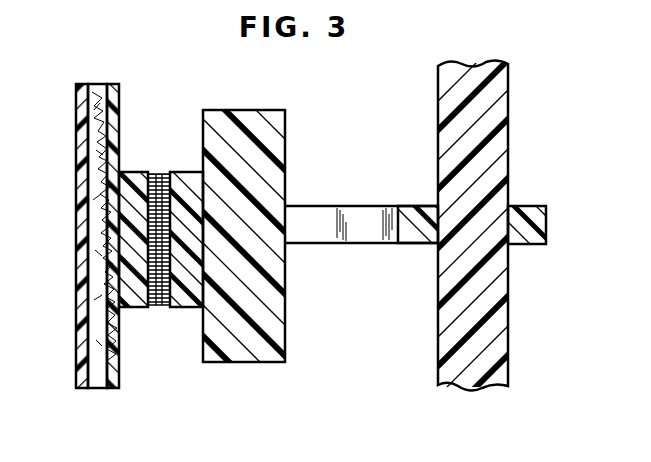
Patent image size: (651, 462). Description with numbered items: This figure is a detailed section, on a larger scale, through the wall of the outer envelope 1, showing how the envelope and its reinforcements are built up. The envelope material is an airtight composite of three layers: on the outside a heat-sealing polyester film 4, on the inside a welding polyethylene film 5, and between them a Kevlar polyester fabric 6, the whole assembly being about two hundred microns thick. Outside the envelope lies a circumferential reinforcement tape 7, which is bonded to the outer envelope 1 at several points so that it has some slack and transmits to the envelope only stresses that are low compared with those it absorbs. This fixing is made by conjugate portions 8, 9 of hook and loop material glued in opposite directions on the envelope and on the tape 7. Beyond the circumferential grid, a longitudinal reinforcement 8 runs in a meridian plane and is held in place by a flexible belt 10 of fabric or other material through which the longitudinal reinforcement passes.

The outer envelope 1 is at (134, 128).
The heat-sealing polyester film 4 is at (112, 372).
The welding polyethylene film 5 is at (82, 378).
The Kevlar polyester fabric 6 is at (98, 380).
The circumferential reinforcement tape 7 is at (257, 347).
The longitudinal reinforcement 8 is at (132, 298).
The hook and loop portion 9 is at (178, 300).
The flexible belt 10 is at (527, 238).